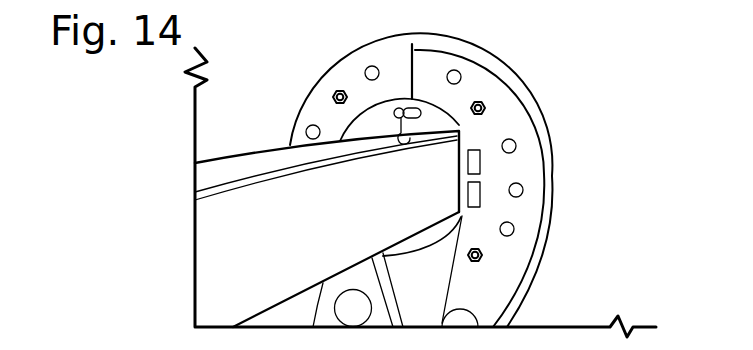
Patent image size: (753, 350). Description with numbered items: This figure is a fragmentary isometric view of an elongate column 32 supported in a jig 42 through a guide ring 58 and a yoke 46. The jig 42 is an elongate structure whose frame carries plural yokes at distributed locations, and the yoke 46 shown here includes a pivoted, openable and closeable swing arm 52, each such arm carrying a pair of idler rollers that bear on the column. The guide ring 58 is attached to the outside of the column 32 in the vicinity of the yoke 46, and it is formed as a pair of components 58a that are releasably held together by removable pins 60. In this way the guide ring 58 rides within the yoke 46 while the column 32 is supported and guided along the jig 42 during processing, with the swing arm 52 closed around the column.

The column 32 is at (231, 167).
The jig 42 is at (256, 63).
The yoke 46 is at (522, 110).
The swing arm 52 is at (431, 51).
The guide ring 58 is at (480, 178).
The guide ring component 58a is at (368, 125).
The removable pin 60 is at (407, 110).